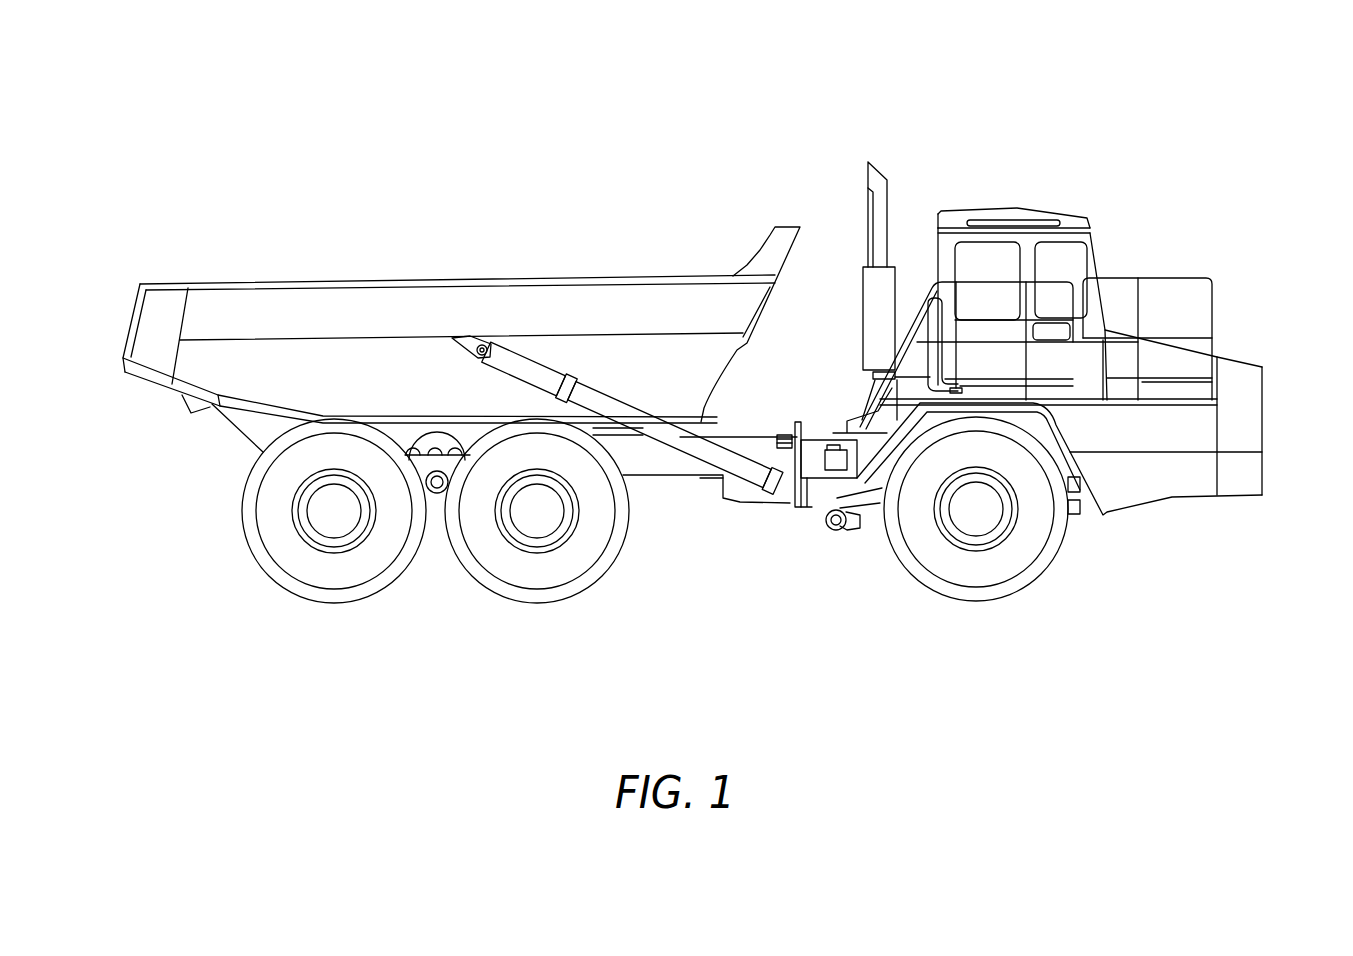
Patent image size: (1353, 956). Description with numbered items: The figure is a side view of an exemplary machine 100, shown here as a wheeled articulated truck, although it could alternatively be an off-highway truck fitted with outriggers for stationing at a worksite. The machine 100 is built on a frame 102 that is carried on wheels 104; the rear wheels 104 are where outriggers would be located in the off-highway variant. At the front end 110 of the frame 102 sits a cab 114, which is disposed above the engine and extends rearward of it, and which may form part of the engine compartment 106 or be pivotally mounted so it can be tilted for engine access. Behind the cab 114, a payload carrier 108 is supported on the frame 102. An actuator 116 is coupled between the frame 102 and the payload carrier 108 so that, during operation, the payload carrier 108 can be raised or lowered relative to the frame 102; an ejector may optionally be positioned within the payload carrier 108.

The machine 100 is at (741, 120).
The frame 102 is at (1140, 513).
The wheels 104 is at (323, 603).
The engine compartment 106 is at (1242, 362).
The payload carrier 108 is at (440, 315).
The front end 110 is at (1189, 220).
The cab 114 is at (1078, 218).
The actuator 116 is at (702, 446).